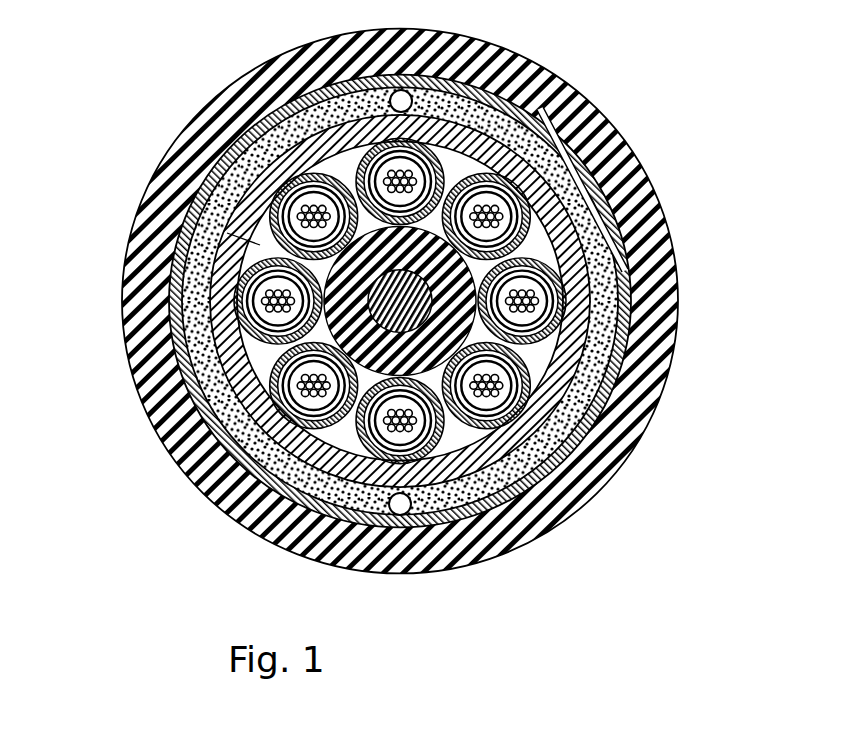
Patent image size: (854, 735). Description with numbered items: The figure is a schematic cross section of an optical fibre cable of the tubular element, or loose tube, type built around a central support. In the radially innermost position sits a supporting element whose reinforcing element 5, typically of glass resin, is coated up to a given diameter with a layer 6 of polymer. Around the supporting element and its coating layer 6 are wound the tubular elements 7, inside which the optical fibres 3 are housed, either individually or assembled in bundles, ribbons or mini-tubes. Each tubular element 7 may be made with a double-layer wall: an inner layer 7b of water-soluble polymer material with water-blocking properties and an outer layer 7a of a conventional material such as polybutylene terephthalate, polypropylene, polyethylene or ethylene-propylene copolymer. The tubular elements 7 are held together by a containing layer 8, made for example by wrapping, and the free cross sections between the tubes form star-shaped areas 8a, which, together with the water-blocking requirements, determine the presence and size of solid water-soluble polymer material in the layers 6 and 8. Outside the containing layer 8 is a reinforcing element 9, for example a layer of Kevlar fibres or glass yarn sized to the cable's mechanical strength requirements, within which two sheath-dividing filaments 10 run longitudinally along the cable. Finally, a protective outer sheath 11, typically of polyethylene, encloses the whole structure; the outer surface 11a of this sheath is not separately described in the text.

The optical fibres 3 is at (250, 347).
The reinforcing element 5 is at (452, 66).
The coating layer 6 is at (345, 170).
The tubular elements 7 is at (580, 163).
The outer layer 7a is at (615, 327).
The inner layer 7b is at (603, 236).
The containing layer 8 is at (603, 390).
The star-shaped areas 8a is at (230, 132).
The reinforcing element 9 is at (575, 440).
The sheath-dividing filaments 10 is at (430, 530).
The protective outer sheath 11 is at (507, 540).
The outer jacket surface 11a is at (197, 453).